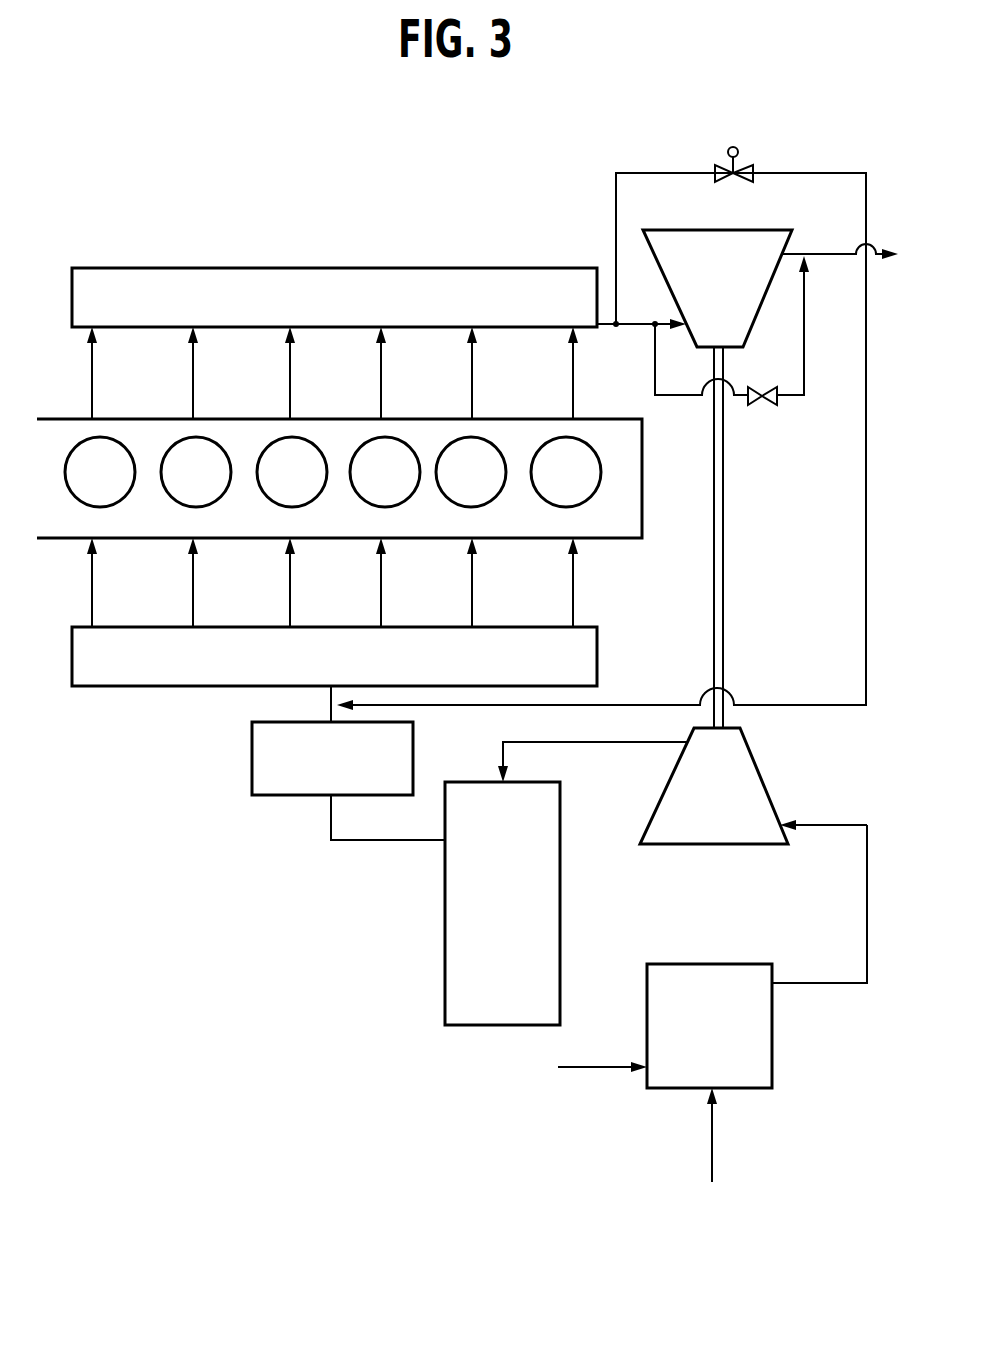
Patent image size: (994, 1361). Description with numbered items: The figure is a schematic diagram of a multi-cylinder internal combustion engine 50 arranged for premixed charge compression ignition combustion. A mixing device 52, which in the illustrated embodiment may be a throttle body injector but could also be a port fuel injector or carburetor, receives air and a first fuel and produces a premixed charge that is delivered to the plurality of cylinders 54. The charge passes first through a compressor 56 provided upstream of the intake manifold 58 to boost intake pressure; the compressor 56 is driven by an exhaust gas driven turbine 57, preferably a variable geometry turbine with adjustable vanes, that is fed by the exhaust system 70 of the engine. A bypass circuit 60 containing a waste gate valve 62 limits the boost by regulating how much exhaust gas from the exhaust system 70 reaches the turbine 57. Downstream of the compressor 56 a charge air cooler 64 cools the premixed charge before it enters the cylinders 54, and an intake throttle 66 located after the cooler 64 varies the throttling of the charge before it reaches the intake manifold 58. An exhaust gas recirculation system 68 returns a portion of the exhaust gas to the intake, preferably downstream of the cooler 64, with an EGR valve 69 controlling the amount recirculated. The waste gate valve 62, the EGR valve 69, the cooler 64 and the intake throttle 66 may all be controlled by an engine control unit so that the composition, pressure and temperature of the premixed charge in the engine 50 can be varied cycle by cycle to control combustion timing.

The multi-cylinder internal combustion engine 50 is at (207, 193).
The mixing device 52 is at (631, 1137).
The cylinders 54 is at (120, 443).
The compressor 56 is at (672, 847).
The turbine 57 is at (655, 229).
The intake manifold 58 is at (597, 650).
The bypass circuit 60 is at (804, 400).
The waste gate valve 62 is at (756, 400).
The charge air cooler 64 is at (452, 1025).
The intake throttle 66 is at (260, 795).
The exhaust gas recirculation system 68 is at (647, 160).
The EGR valve 69 is at (755, 167).
The exhaust system 70 is at (531, 232).